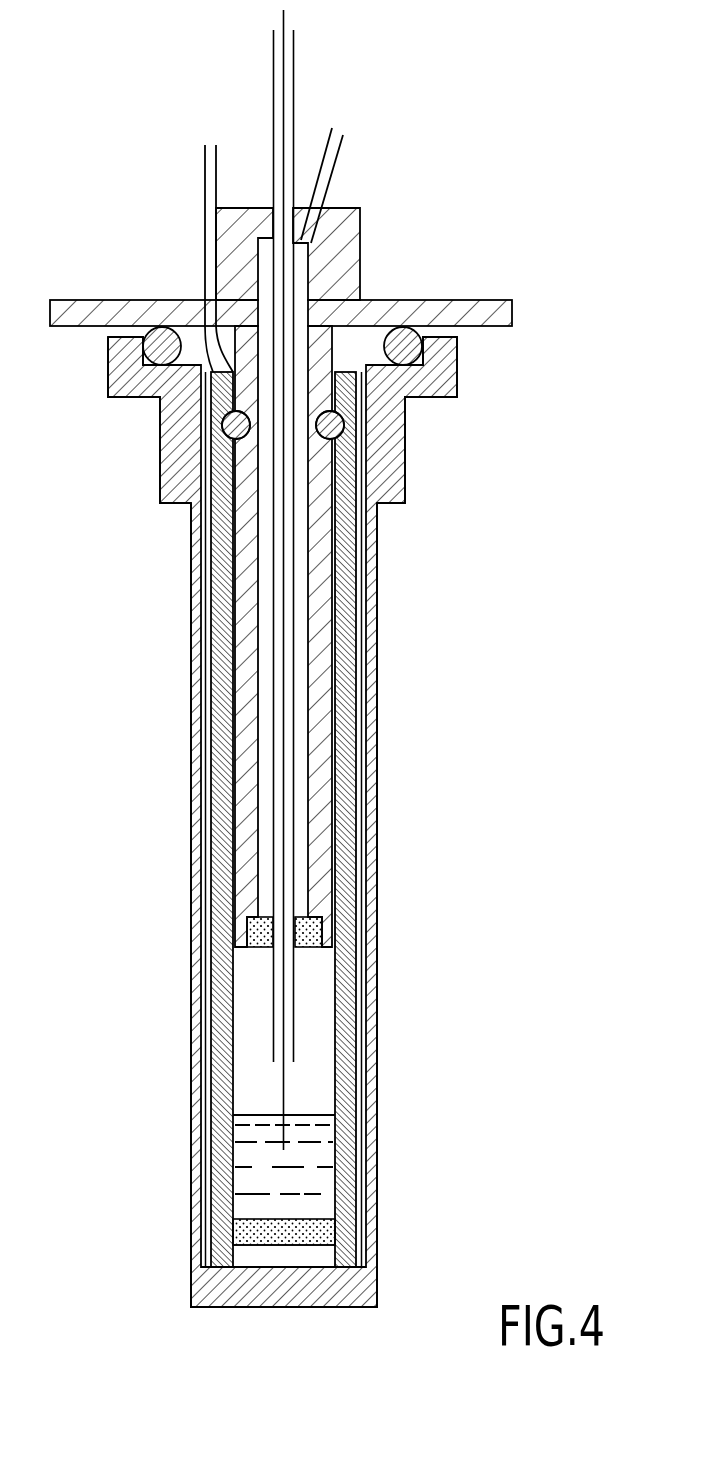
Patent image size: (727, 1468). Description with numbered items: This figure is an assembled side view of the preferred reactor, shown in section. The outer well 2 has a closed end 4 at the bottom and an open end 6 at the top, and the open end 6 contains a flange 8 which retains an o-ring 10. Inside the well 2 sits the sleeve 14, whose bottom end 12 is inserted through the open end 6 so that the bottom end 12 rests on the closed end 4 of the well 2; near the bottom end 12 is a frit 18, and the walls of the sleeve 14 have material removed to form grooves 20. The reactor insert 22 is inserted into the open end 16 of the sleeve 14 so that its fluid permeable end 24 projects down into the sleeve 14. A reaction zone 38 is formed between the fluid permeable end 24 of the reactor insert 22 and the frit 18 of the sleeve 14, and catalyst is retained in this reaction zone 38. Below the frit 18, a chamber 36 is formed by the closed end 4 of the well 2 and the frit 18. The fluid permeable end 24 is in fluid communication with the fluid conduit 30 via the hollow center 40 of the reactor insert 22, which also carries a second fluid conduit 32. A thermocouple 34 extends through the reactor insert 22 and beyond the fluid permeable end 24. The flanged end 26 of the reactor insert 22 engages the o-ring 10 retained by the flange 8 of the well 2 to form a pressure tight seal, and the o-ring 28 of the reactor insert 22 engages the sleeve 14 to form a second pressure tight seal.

The well 2 is at (383, 1023).
The closed end 4 is at (370, 1300).
The open end 6 is at (208, 333).
The flange 8 is at (457, 378).
The o-ring 10 is at (408, 330).
The bottom end 12 is at (247, 1257).
The sleeve 14 is at (343, 850).
The open end 16 is at (232, 372).
The frit 18 is at (327, 1233).
The grooves 20 is at (362, 640).
The reactor insert 22 is at (325, 545).
The fluid permeable end 24 is at (317, 930).
The flanged end 26 is at (514, 305).
The o-ring 28 is at (340, 423).
The fluid conduit 30 is at (343, 138).
The fluid conduit 32 is at (205, 152).
The thermocouple 34 is at (285, 13).
The chamber 36 is at (287, 1260).
The reaction zone 38 is at (322, 1172).
The hollow center 40 is at (297, 287).